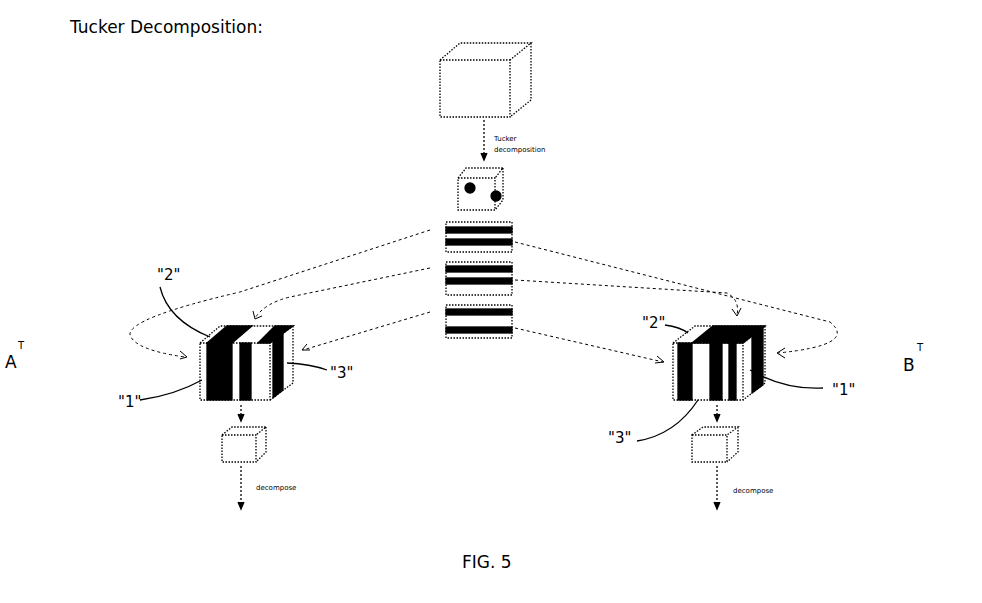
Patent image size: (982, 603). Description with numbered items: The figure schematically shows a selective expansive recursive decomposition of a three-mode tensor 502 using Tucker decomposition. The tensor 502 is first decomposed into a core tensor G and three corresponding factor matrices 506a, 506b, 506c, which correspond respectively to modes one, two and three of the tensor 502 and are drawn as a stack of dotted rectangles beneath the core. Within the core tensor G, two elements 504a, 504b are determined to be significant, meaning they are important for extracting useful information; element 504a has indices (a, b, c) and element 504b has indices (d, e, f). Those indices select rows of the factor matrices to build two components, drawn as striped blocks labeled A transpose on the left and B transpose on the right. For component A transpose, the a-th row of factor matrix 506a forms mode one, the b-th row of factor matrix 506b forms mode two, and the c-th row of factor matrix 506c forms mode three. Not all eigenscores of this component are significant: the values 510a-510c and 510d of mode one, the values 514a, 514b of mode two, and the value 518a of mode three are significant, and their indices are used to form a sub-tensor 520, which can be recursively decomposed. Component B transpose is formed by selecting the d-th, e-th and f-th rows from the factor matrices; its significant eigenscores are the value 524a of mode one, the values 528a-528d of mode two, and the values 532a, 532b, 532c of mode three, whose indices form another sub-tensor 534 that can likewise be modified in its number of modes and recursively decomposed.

The three-mode tensor 502 is at (530, 70).
The core tensor G is at (497, 172).
The element 504a is at (466, 190).
The element 504b is at (500, 197).
The factor matrix 506a is at (514, 233).
The factor matrix 506b is at (514, 290).
The factor matrix 506c is at (514, 318).
The values/eigenscores 510a-510c is at (220, 400).
The value/eigenscore 510d is at (250, 388).
The value/eigenscore 514a is at (234, 328).
The value/eigenscore 514b is at (252, 342).
The value/eigenscore 518a is at (277, 373).
The sub-tensor 520 is at (230, 460).
The value/eigenscore 524a is at (777, 330).
The values/eigenscores 528a-528d is at (728, 325).
The value/eigenscore 532a is at (680, 382).
The value/eigenscore 532b is at (720, 387).
The value/eigenscore 532c is at (733, 383).
The sub-tensor 534 is at (700, 460).